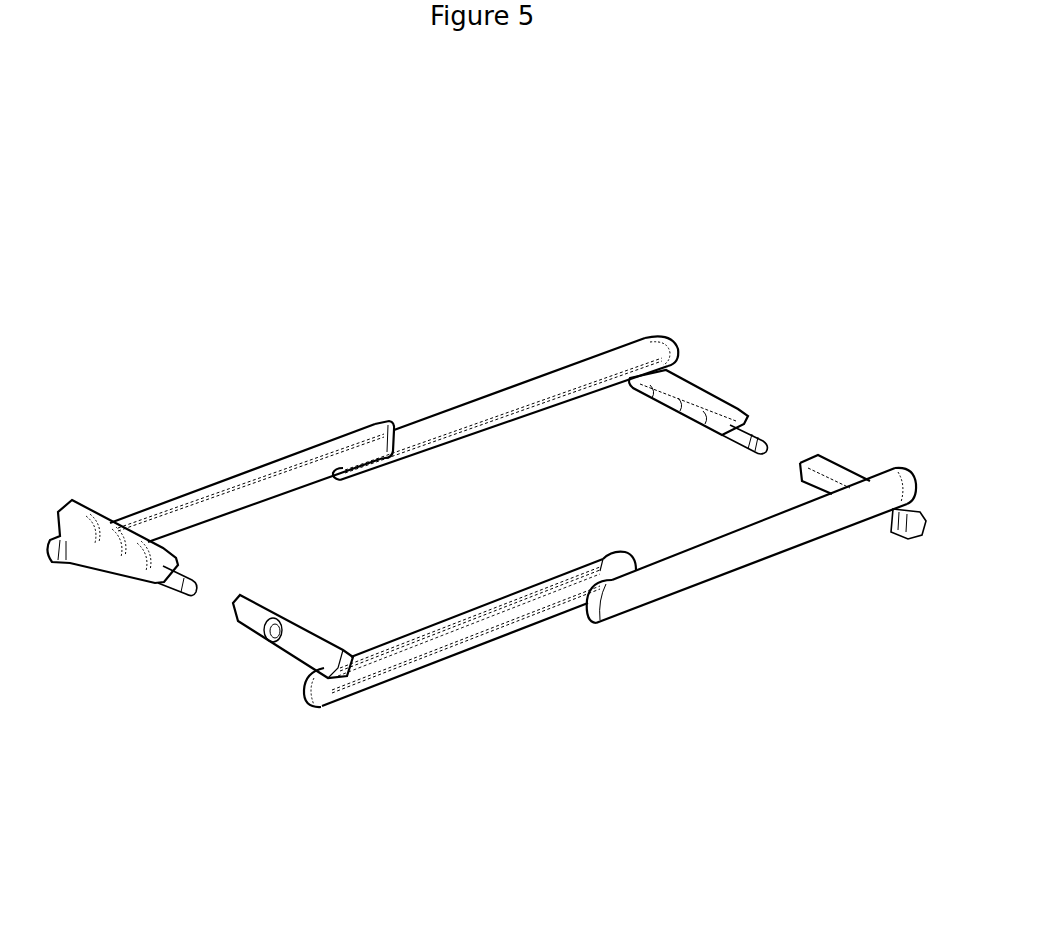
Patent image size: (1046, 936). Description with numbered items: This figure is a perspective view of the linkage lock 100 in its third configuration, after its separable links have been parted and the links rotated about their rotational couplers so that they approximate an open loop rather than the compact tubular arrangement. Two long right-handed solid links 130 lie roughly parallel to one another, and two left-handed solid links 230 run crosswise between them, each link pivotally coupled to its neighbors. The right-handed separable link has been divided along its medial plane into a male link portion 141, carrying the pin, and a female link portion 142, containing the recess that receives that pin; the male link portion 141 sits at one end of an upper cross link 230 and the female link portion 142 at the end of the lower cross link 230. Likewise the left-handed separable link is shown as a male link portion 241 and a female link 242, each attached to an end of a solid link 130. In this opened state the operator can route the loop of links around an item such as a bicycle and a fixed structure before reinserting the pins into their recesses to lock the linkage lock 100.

The linkage lock 100 is at (473, 147).
The right-handed solid link 130 is at (525, 395).
The left-handed solid link 230 is at (263, 487).
The male link portion 141 is at (127, 557).
The female link portion 142 is at (250, 613).
The male link portion 241 is at (717, 402).
The female link 242 is at (822, 472).